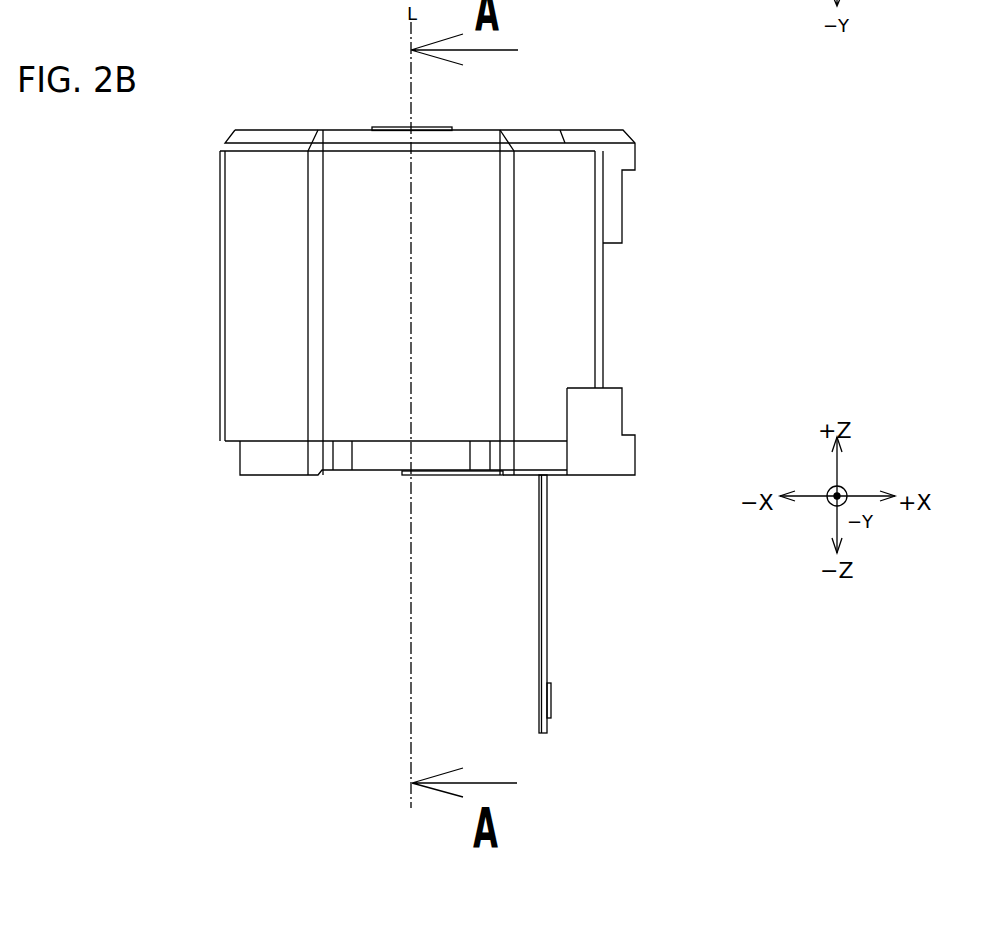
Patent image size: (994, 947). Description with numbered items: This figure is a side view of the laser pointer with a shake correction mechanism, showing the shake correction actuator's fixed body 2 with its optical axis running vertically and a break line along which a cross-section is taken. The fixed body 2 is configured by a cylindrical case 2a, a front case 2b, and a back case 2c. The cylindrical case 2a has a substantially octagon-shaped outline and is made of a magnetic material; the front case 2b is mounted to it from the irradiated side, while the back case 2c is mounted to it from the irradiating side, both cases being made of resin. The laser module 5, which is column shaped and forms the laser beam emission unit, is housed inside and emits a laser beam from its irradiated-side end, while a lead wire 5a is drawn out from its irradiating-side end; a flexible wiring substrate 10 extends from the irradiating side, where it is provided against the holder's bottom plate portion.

The fixed body 2 is at (112, 152).
The cylindrical case 2a is at (245, 305).
The front case 2b is at (240, 137).
The back case 2c is at (250, 460).
The laser module 5 is at (392, 127).
The lead wire 5a is at (540, 668).
The flexible wiring substrate 10 is at (547, 613).